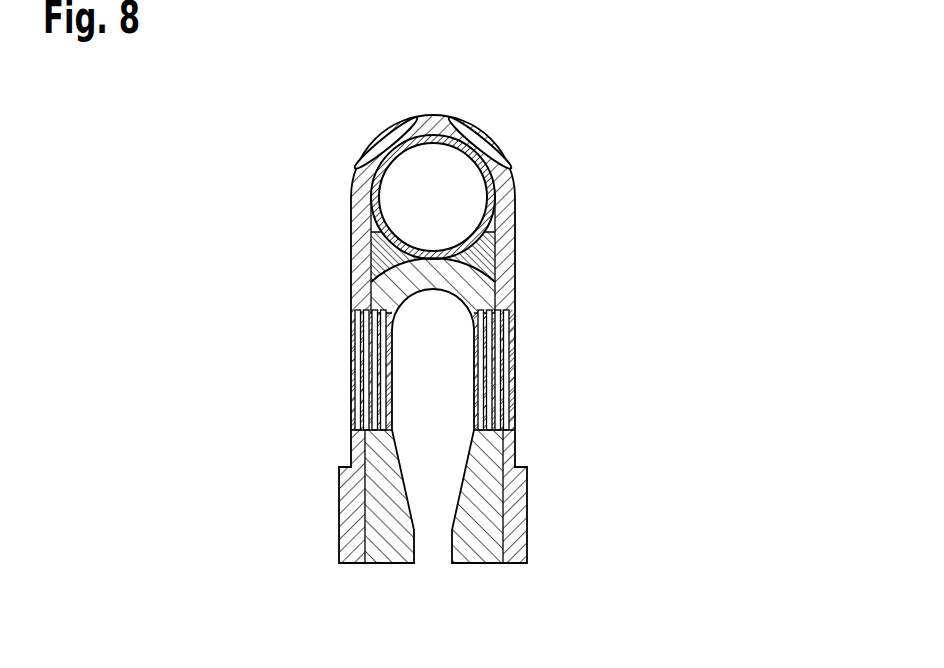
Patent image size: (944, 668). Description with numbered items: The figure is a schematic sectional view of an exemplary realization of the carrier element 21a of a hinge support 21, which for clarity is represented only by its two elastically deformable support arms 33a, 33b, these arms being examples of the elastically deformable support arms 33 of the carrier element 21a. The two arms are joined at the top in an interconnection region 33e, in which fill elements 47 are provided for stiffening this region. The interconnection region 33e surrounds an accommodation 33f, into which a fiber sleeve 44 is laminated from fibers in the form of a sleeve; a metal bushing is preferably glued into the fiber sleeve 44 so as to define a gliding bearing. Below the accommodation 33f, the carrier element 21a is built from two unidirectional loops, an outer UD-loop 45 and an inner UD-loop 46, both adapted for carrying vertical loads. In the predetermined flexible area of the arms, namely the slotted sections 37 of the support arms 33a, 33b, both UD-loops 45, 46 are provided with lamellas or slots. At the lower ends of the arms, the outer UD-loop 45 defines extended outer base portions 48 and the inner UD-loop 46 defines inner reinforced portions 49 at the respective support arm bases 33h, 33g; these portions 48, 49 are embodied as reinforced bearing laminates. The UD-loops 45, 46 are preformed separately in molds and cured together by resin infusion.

The hinge support 21 is at (372, 351).
The carrier element 21a is at (516, 131).
The fiber sleeve 44 is at (398, 177).
The accommodation 33f is at (480, 172).
The interconnection region 33e is at (347, 220).
The fill elements 47 is at (384, 244).
The outer UD-loop 45 is at (505, 267).
The elastically deformable support arms 33 is at (433, 398).
The inner UD-loop 46 is at (484, 301).
The slotted sections 37 is at (356, 385).
The first elastically deformable support arm 33a is at (347, 444).
The second elastically deformable support arm 33b is at (519, 444).
The support arm base 33h is at (337, 486).
The support arm base 33g is at (529, 486).
The extended outer base portions 48 is at (354, 538).
The inner reinforced portions 49 is at (389, 567).